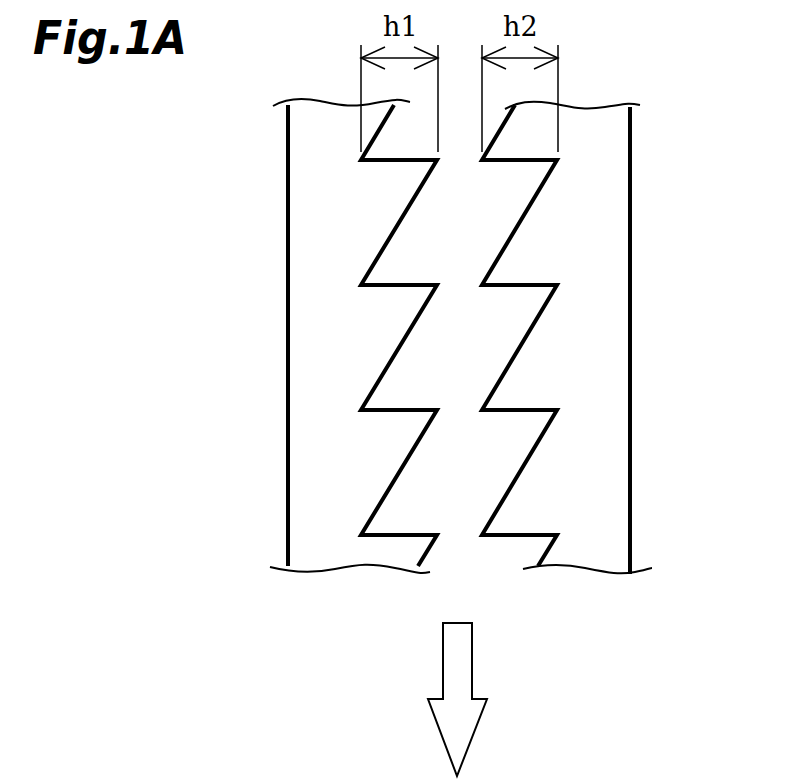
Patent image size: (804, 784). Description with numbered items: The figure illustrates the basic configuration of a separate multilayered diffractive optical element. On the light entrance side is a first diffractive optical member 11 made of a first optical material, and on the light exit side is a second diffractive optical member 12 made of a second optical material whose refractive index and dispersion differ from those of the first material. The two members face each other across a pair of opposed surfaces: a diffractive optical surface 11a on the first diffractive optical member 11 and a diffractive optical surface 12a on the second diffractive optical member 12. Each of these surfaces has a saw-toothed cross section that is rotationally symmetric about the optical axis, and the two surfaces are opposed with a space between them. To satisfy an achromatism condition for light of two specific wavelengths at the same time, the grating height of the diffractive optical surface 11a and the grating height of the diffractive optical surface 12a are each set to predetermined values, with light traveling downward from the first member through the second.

The first diffractive optical member 11 is at (343, 368).
The diffractive optical surface of the first diffractive optical member 11a is at (407, 213).
The second diffractive optical member 12 is at (597, 371).
The diffractive optical surface of the second diffractive optical member 12a is at (520, 348).